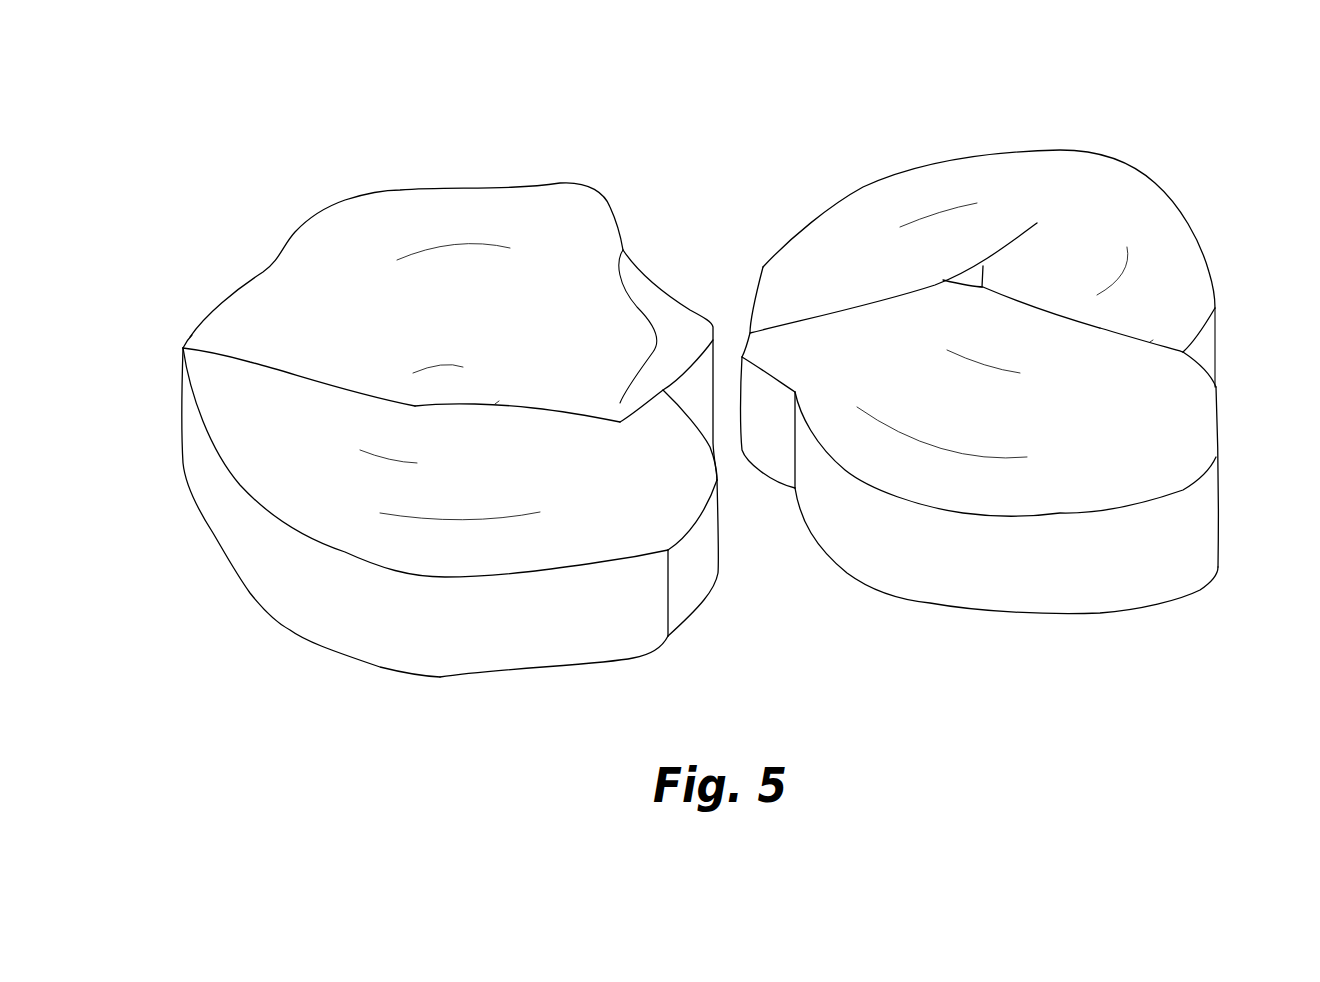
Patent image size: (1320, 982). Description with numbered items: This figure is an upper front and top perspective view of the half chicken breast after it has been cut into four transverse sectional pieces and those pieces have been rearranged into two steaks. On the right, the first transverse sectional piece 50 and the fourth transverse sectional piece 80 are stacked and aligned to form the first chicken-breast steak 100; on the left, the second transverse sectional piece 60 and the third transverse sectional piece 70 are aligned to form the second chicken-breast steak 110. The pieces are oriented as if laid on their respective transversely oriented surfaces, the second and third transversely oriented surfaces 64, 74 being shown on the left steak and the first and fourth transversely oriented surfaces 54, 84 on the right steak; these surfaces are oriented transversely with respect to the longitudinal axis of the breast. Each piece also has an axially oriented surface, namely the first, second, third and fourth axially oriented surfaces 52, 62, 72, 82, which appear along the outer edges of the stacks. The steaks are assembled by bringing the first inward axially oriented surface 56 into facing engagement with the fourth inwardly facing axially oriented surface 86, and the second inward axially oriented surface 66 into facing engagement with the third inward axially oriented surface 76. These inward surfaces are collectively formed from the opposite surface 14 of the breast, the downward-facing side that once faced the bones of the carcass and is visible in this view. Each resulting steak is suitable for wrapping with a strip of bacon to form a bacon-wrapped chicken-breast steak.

The opposite surface 14 is at (497, 403).
The first transverse sectional piece 50 is at (1043, 630).
The first axially oriented surface 52 is at (1168, 568).
The first transversely oriented surface 54 is at (929, 429).
The first inward axially oriented surface 56 is at (1118, 318).
The second transverse sectional piece 60 is at (210, 569).
The second axially oriented surface 62 is at (213, 465).
The second transversely oriented surface 64 is at (277, 452).
The second inward axially oriented surface 66 is at (318, 363).
The third transverse sectional piece 70 is at (430, 160).
The third axially oriented surface 72 is at (608, 203).
The third transversely oriented surface 74 is at (328, 265).
The third inward axially oriented surface 76 is at (552, 412).
The fourth transverse sectional piece 80 is at (1090, 130).
The fourth axially oriented surface 82 is at (1208, 350).
The fourth transversely oriented surface 84 is at (1041, 193).
The fourth inwardly facing axially oriented surface 86 is at (1063, 322).
The first chicken-breast steak 100 is at (905, 142).
The second chicken-breast steak 110 is at (238, 235).